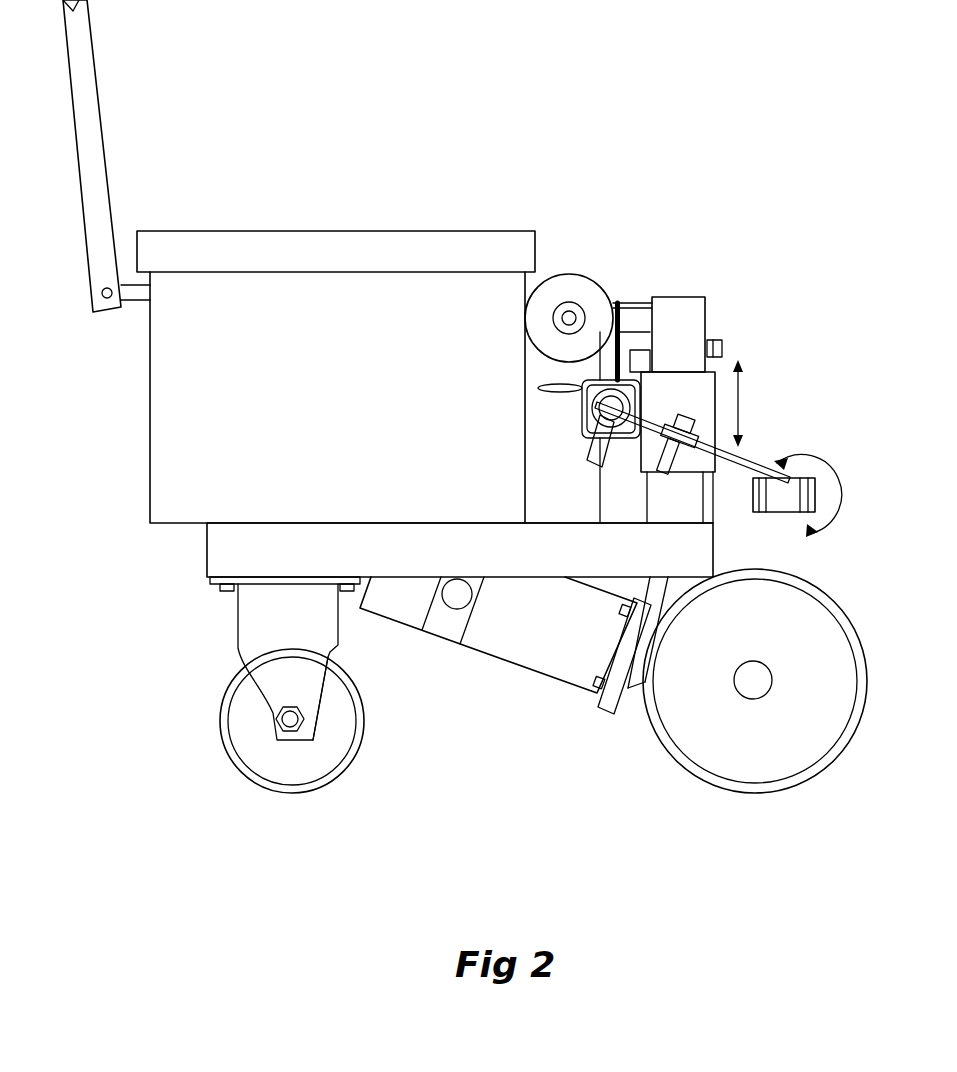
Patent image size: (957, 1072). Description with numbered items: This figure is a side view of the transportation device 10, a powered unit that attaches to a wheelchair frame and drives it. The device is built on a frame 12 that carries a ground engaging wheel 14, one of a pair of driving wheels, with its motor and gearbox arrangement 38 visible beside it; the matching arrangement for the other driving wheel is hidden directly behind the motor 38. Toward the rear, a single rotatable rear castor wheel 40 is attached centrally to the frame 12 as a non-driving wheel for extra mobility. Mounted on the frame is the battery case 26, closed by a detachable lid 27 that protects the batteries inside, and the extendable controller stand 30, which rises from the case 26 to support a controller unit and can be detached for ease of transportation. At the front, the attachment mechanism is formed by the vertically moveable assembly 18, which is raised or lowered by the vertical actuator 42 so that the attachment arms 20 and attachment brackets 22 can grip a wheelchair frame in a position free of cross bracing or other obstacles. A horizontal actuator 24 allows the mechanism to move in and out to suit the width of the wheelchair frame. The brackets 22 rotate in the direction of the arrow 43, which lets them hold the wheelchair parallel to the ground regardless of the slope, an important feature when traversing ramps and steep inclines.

The transportation device 10 is at (625, 98).
The frame 12 is at (232, 556).
The ground engaging wheel 14 is at (703, 740).
The vertically moveable assembly 18 is at (703, 402).
The attachment arm 20 is at (740, 457).
The attachment bracket 22 is at (778, 507).
The horizontal actuator 24 is at (582, 290).
The battery case 26 is at (183, 457).
The detachable lid 27 is at (285, 247).
The extendable controller stand 30 is at (96, 121).
The motor and gearbox arrangement 38 is at (538, 657).
The rear castor wheel 40 is at (358, 733).
The vertical actuator 42 is at (613, 494).
The arrow 43 is at (826, 466).